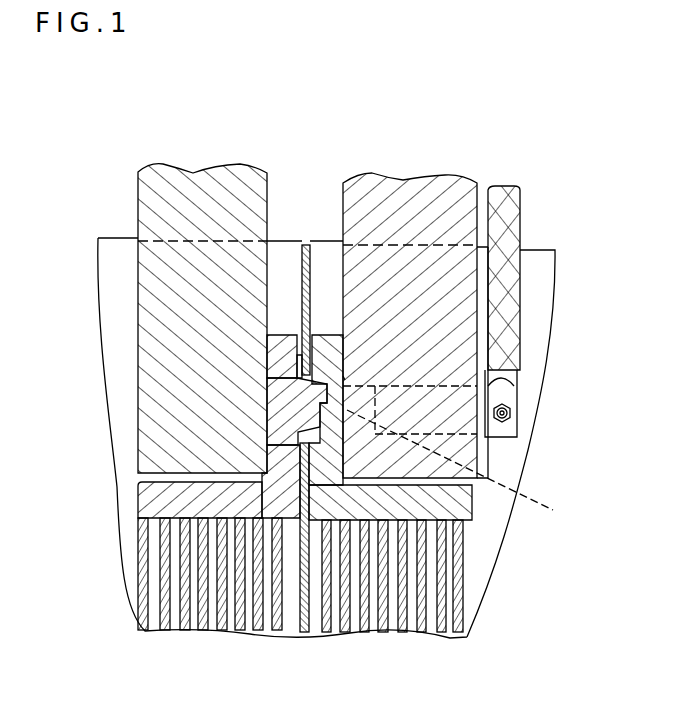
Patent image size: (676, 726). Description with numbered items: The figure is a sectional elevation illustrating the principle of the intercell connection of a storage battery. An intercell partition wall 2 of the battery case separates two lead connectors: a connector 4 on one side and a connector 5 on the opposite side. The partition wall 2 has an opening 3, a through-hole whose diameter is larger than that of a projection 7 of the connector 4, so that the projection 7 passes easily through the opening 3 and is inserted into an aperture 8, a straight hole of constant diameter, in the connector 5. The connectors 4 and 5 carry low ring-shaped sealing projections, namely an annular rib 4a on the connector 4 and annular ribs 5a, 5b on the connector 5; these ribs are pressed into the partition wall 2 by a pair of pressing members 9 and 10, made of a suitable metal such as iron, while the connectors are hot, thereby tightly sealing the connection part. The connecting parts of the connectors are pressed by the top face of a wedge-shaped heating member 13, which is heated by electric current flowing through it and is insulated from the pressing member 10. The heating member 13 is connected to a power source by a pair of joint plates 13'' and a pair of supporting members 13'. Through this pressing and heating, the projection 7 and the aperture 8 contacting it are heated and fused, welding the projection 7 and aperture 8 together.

The intercell partition wall 2 is at (306, 240).
The opening 3 is at (300, 383).
The connector 4 is at (267, 463).
The annular rib 4a is at (290, 355).
The connector 5 is at (333, 490).
The annular rib 5a is at (345, 378).
The annular rib 5b is at (313, 352).
The projection 7 is at (295, 418).
The aperture 8 is at (343, 370).
The pressing member 9 is at (207, 195).
The pressing member 10 is at (420, 195).
The heating member 13 is at (464, 470).
The supporting member 13' is at (526, 257).
The joint plate 13'' is at (545, 403).